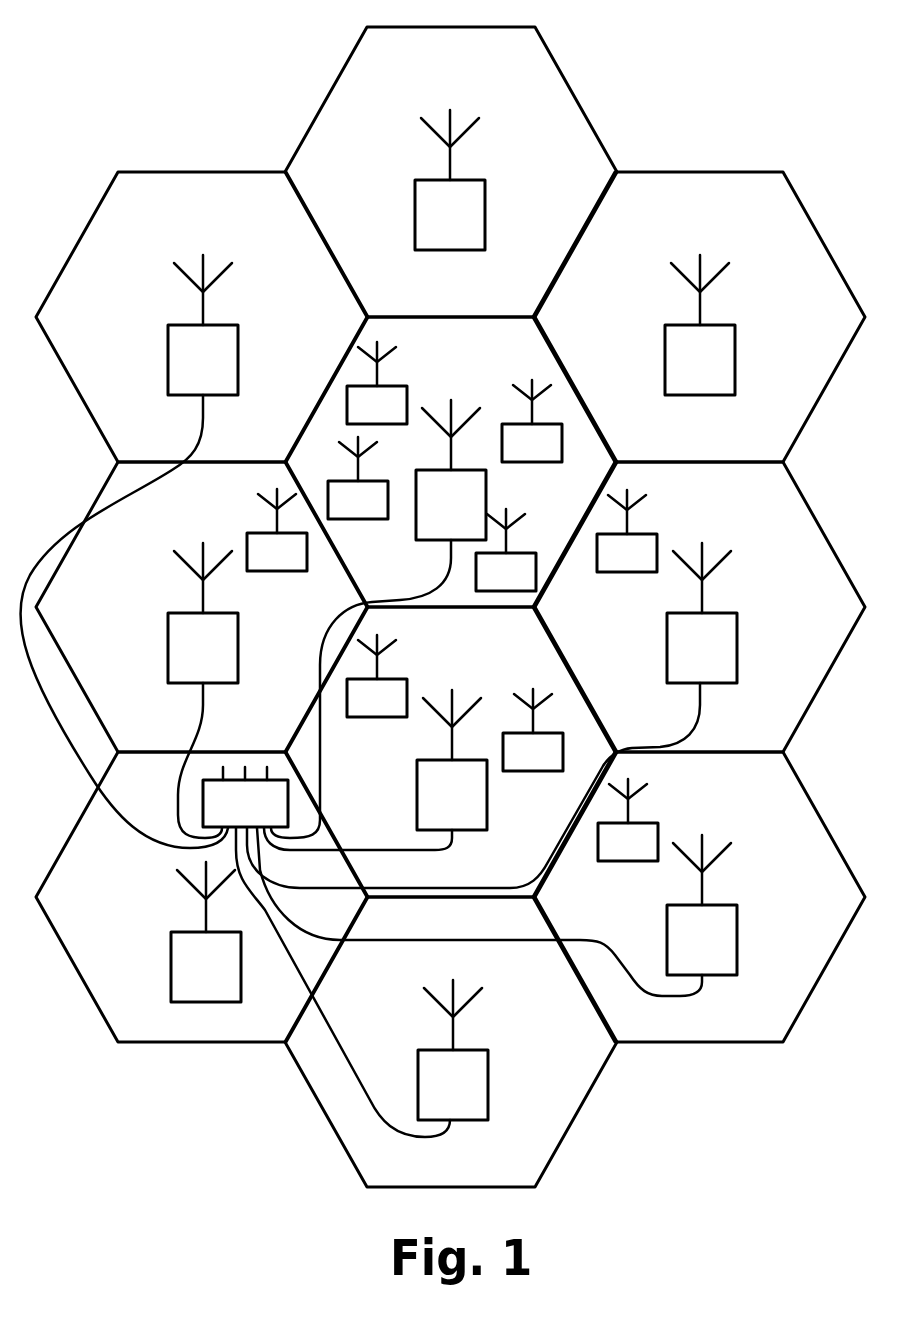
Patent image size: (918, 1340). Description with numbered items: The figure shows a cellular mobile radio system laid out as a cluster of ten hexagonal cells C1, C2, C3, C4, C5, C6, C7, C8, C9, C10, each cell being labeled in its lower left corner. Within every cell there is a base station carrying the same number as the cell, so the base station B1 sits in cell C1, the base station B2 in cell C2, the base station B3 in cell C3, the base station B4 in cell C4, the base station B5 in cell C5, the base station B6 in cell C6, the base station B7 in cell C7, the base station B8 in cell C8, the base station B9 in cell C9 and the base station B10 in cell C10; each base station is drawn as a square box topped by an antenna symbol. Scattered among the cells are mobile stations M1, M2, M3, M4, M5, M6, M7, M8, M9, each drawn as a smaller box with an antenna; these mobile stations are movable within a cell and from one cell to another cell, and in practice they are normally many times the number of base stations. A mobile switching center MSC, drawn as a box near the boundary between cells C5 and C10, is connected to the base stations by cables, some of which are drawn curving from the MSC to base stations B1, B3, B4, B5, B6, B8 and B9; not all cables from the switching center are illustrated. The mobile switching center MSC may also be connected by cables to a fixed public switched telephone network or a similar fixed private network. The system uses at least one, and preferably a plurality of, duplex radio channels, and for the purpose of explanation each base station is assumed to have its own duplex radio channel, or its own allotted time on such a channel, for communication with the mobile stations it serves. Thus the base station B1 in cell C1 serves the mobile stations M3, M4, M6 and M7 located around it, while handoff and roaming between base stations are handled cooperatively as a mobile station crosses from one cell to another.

The cell C1 is at (392, 590).
The cell C2 is at (643, 447).
The cell C3 is at (644, 735).
The cell C4 is at (394, 882).
The cell C5 is at (147, 736).
The cell C6 is at (146, 447).
The cell C7 is at (391, 301).
The cell C8 is at (646, 1027).
The cell C9 is at (396, 1172).
The cell C10 is at (154, 1027).
The base station B1 is at (378, 619).
The base station B2 is at (700, 325).
The base station B3 is at (492, 715).
The base station B4 is at (375, 770).
The base station B5 is at (203, 690).
The base station B6 is at (129, 551).
The base station B7 is at (450, 180).
The base station B8 is at (497, 912).
The base station B9 is at (362, 982).
The base station B10 is at (206, 932).
The mobile station M1 is at (628, 820).
The mobile station M2 is at (277, 530).
The mobile station M3 is at (358, 478).
The mobile station M4 is at (532, 421).
The mobile station M5 is at (627, 531).
The mobile station M6 is at (377, 383).
The mobile station M7 is at (506, 550).
The mobile station M8 is at (533, 730).
The mobile station M9 is at (377, 676).
The mobile switching center MSC is at (245, 797).